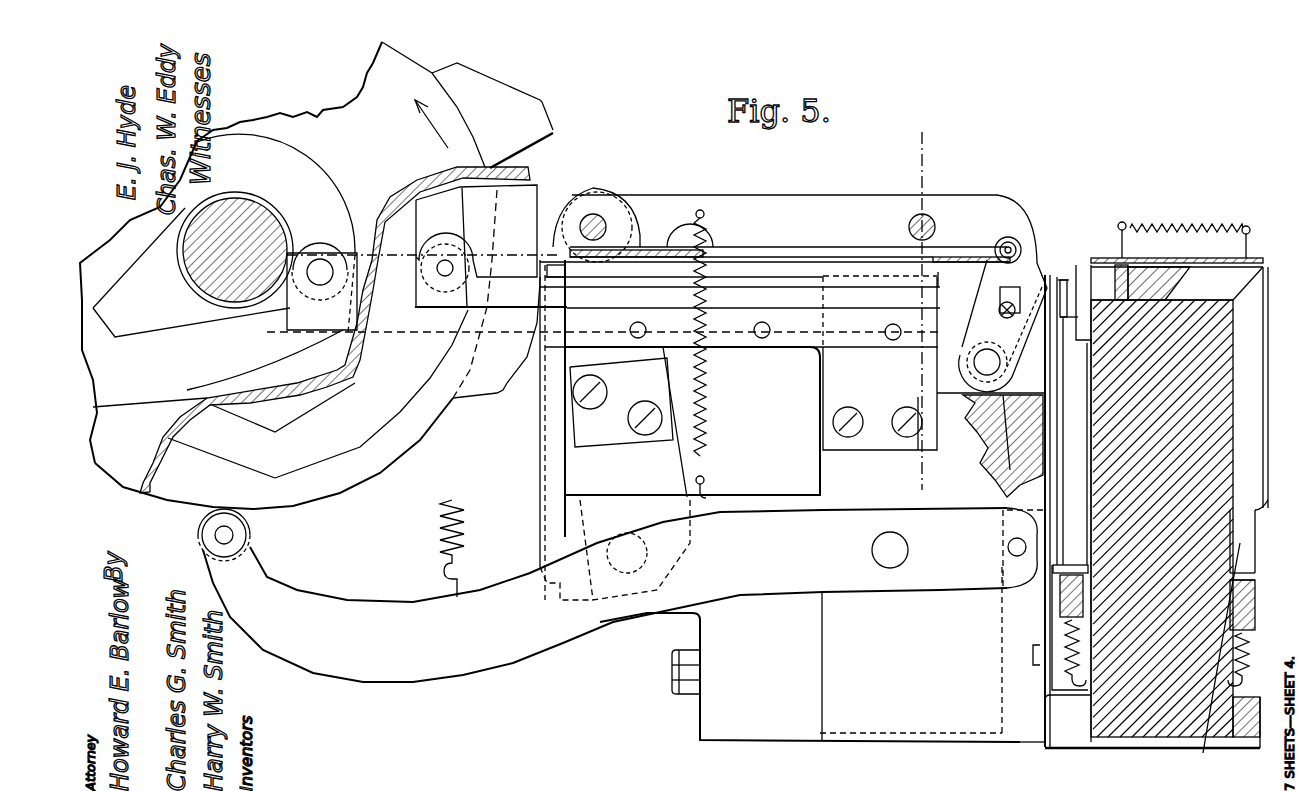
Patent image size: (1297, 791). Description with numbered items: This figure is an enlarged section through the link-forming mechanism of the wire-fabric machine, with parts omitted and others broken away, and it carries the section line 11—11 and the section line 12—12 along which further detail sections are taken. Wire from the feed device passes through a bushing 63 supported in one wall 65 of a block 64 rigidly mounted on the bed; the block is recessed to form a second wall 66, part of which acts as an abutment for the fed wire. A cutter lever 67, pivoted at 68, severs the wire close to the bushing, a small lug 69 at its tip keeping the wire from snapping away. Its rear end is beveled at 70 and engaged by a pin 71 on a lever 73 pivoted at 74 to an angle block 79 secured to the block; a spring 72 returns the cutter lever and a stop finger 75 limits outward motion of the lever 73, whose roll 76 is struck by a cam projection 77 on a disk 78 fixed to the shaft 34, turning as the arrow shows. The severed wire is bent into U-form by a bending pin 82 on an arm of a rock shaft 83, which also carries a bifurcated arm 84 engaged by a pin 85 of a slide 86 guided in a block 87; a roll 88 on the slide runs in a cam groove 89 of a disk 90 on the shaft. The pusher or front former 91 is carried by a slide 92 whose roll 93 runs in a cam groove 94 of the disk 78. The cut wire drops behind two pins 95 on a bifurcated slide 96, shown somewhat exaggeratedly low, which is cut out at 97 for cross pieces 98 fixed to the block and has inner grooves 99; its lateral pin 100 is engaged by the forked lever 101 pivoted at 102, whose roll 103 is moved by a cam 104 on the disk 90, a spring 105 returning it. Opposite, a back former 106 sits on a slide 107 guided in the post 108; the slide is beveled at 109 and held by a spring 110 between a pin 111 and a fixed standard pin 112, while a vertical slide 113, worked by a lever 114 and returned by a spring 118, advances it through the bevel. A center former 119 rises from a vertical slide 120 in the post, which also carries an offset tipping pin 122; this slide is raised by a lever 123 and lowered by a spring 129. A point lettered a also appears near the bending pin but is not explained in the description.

The section line 11— 11 is at (920, 132).
The section line 12— 12 is at (742, 262).
The shaft 34 is at (243, 245).
The bushing 63 is at (1030, 263).
The block 64 is at (890, 690).
The wall 65 is at (925, 235).
The wall 66 is at (972, 349).
The cutter lever 67 is at (847, 205).
The pivot 68 is at (930, 220).
The lug or shoulder 69 is at (1021, 248).
The beveled end 70 is at (612, 230).
The pin 71 is at (593, 215).
The spring 72 is at (703, 437).
The lever 73 is at (657, 470).
The pivot 74 is at (624, 553).
The stop finger 75 is at (565, 449).
The roll 76 is at (570, 203).
The cam projection 77 is at (537, 120).
The disk 78 is at (398, 80).
The angle block 79 is at (722, 615).
The bending pin 82 is at (1036, 362).
The rock shaft 83 is at (985, 362).
The bifurcated arm 84 is at (997, 323).
The pin 85 is at (1003, 310).
The slide 86 is at (807, 297).
The block 87 is at (837, 388).
The roll 88 is at (445, 240).
The cam groove 89 is at (367, 417).
The disk 90 is at (343, 473).
The pusher or front former 91 is at (933, 260).
The slide 92 is at (300, 318).
The roll 93 is at (310, 250).
The cam groove 94 is at (283, 165).
The pins 95 is at (1032, 263).
The bifurcated slide 96 is at (1027, 467).
The cut-out 97 is at (1046, 463).
The cross pieces 98 is at (1046, 420).
The grooves 99 is at (1040, 270).
The lateral pin 100 is at (1008, 548).
The lever 101 is at (928, 572).
The pivot 102 is at (888, 560).
The roll 103 is at (252, 533).
The cam 104 is at (485, 395).
The spring 105 is at (467, 525).
The back former 106 is at (1103, 260).
The slide 107 is at (1220, 280).
The standard or post 108 is at (1160, 673).
The beveled end 109 is at (1243, 289).
The spring 110 is at (1197, 232).
The pin 111 is at (1125, 257).
The standard pin 112 is at (1250, 237).
The vertical slide 113 is at (1152, 664).
The lever 114 is at (1255, 593).
The spring 118 is at (1248, 670).
The center former 119 is at (1072, 293).
The vertical slide 120 is at (977, 440).
The tipping pin 122 is at (1123, 260).
The lever 123 is at (1060, 588).
The spring 129 is at (1062, 633).
The point a is at (1022, 253).